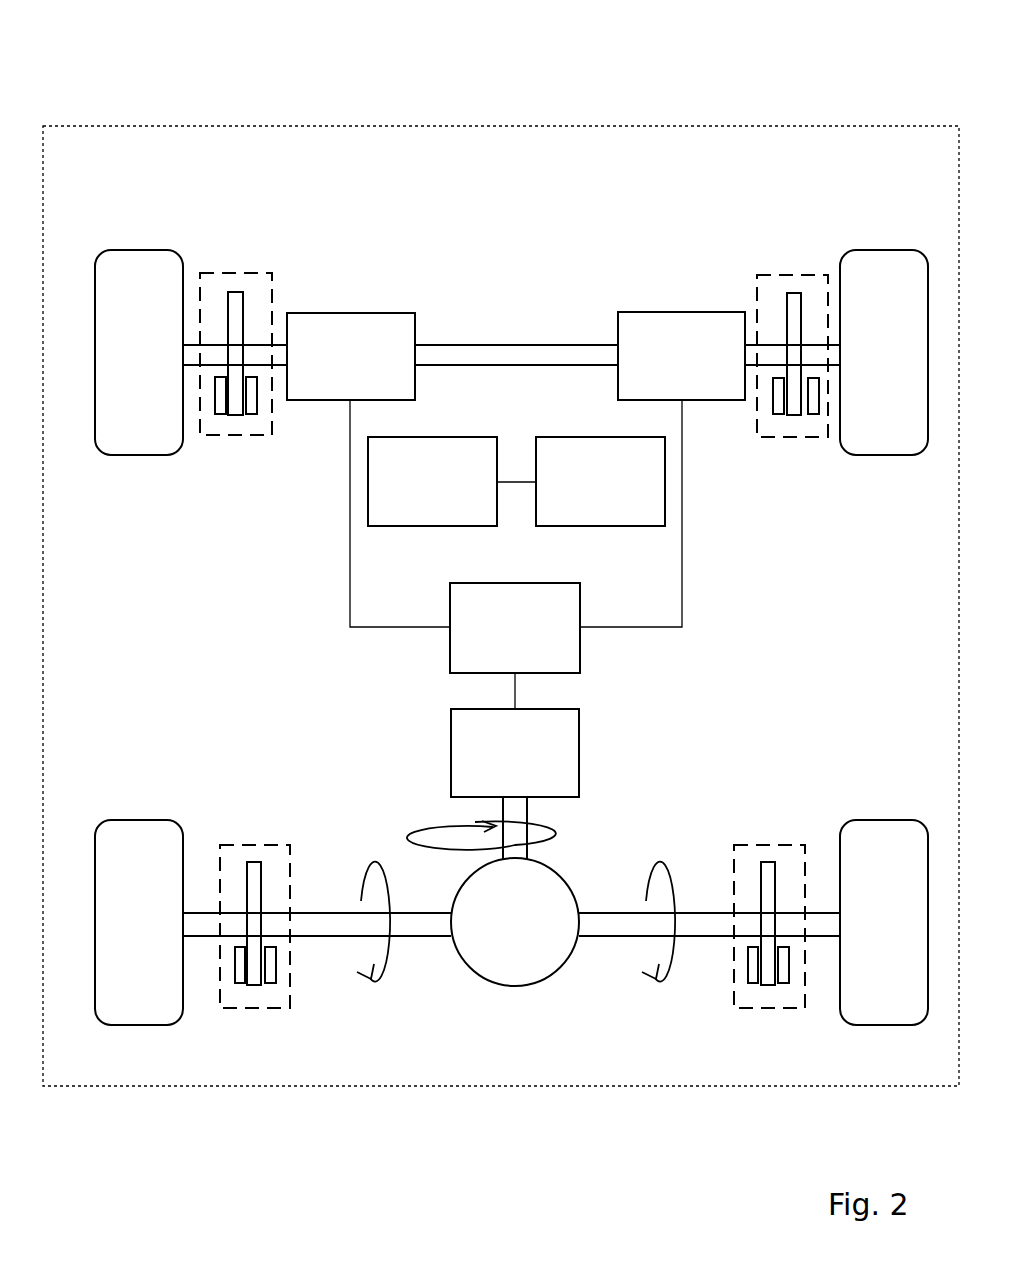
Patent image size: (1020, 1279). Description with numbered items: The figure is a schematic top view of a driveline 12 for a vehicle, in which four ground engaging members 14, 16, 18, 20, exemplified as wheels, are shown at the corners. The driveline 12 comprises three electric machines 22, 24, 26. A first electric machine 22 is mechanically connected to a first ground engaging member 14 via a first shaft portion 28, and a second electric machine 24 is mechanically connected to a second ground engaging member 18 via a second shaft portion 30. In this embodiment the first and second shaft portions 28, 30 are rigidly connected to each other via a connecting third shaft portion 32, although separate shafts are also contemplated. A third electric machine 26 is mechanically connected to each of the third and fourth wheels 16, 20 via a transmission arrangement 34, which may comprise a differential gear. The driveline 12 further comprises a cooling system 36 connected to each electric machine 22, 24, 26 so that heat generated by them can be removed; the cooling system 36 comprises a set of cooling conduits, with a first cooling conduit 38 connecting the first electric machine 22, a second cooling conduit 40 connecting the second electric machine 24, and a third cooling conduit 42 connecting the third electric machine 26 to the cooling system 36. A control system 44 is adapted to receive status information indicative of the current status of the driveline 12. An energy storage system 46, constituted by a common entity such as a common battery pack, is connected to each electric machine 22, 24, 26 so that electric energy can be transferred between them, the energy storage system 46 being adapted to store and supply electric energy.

The driveline 12 is at (780, 96).
The first ground engaging member 14 is at (121, 376).
The third ground engaging member 16 is at (121, 946).
The second ground engaging member 18 is at (866, 376).
The fourth ground engaging member 20 is at (866, 946).
The first electric machine 22 is at (332, 378).
The second electric machine 24 is at (664, 378).
The third electric machine 26 is at (497, 771).
The first shaft portion 28 is at (263, 328).
The second shaft portion 30 is at (772, 333).
The third shaft portion 32 is at (497, 336).
The transmission arrangement 34 is at (497, 939).
The cooling system 36 is at (497, 646).
The first cooling conduit 38 is at (335, 514).
The second cooling conduit 40 is at (697, 541).
The third cooling conduit 42 is at (482, 688).
The control system 44 is at (414, 501).
The energy storage system 46 is at (582, 501).